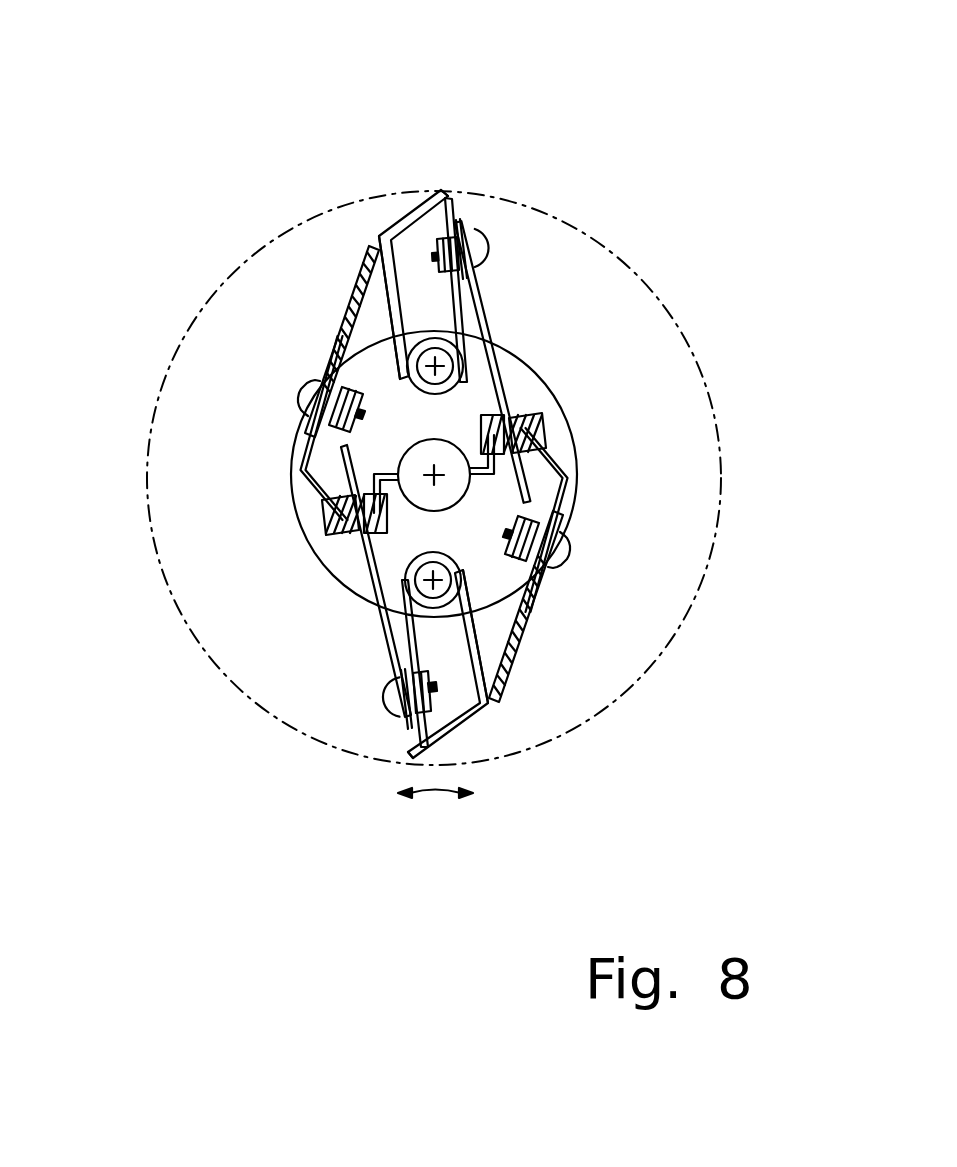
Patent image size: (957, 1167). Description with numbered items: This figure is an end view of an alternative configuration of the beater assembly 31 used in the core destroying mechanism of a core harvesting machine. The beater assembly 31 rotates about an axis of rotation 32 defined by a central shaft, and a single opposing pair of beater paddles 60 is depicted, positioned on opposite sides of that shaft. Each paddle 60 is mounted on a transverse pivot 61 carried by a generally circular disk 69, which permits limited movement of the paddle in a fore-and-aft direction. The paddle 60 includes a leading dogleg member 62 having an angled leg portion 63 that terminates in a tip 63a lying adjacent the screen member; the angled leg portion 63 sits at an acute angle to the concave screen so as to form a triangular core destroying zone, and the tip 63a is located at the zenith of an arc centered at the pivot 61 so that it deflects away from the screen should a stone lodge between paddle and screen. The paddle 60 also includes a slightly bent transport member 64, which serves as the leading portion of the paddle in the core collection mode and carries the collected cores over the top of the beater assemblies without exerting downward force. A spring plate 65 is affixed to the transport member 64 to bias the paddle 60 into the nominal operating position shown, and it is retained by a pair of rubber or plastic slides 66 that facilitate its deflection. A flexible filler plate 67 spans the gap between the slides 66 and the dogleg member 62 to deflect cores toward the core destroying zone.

The beater assembly 31 is at (713, 334).
The axis of rotation 32 is at (398, 467).
The beater paddle 60 is at (388, 111).
The transverse pivot 61 is at (462, 378).
The dogleg member 62 is at (378, 228).
The angled leg portion 63 is at (413, 205).
The tip 63a is at (441, 192).
The transport member 64 is at (458, 213).
The spring plate 65 is at (487, 317).
The slides 66 is at (487, 418).
The flexible filler plate 67 is at (338, 334).
The circular disk 69 is at (567, 473).